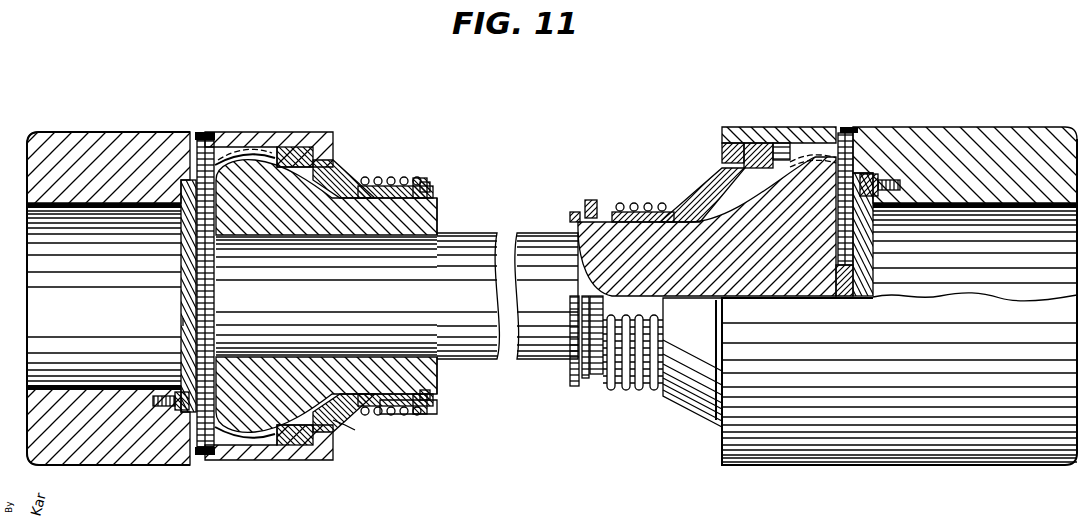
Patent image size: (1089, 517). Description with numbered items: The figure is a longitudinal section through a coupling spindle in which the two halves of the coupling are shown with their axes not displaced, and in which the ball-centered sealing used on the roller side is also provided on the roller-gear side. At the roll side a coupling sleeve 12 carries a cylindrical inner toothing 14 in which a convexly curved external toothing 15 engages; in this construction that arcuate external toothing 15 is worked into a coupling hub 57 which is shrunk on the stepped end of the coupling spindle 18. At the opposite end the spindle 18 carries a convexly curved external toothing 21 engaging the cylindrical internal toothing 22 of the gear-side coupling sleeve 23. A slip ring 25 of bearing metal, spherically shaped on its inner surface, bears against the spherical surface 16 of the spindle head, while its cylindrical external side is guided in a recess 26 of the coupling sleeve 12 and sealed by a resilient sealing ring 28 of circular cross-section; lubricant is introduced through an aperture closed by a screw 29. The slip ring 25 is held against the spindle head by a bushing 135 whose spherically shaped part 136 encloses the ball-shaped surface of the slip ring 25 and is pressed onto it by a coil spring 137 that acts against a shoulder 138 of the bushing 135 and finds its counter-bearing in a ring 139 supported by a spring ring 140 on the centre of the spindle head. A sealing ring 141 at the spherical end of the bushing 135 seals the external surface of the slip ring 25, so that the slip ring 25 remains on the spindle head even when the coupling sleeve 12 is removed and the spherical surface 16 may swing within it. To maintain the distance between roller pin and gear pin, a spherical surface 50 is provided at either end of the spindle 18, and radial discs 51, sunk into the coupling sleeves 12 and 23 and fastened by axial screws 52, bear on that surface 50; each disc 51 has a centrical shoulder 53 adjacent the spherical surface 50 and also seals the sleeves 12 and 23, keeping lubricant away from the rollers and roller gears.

The coupling sleeve 12 is at (57, 131).
The radial disc 51 is at (187, 180).
The screw 29 is at (206, 132).
The spherical surface 50 is at (218, 294).
The sealing ring 28 is at (283, 462).
The recess 26 is at (292, 148).
The slip ring 25 is at (318, 160).
The spherically shaped part 136 is at (335, 170).
The coil spring 137 is at (385, 178).
The shoulder 138 is at (645, 205).
The ring 139 is at (420, 178).
The spring ring 140 is at (432, 408).
The coupling hub 57 is at (437, 200).
The coupling spindle 18 is at (492, 236).
The sealing ring 141 is at (345, 437).
The spherical surface 16 is at (343, 420).
The bushing 135 is at (390, 412).
The cylindrical internal toothing 22 is at (782, 145).
The convexly curved external toothing 21 is at (803, 150).
The coupling sleeve 23 is at (952, 130).
The axial screw 52 is at (168, 406).
The centrical shoulder 53 is at (183, 322).
The cylindrical inner toothing 14 is at (205, 456).
The convexly curved external toothing 15 is at (238, 440).